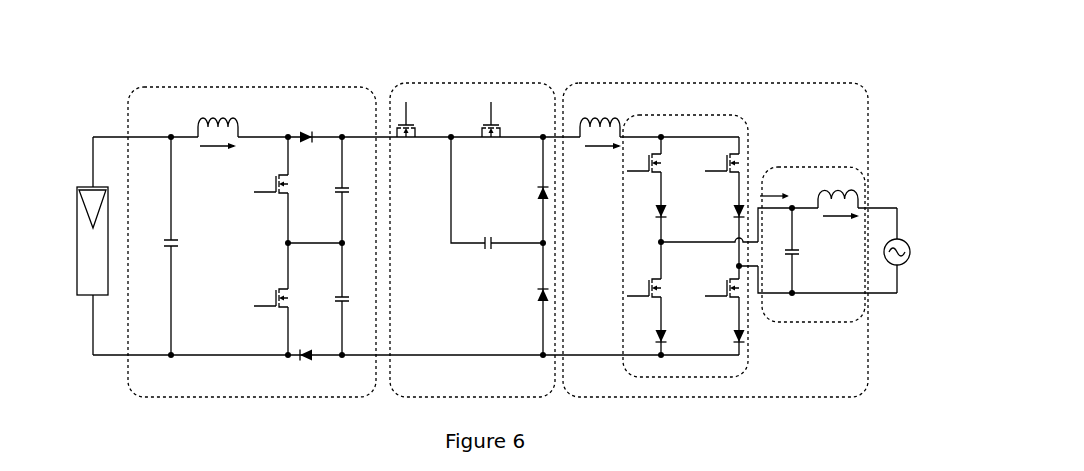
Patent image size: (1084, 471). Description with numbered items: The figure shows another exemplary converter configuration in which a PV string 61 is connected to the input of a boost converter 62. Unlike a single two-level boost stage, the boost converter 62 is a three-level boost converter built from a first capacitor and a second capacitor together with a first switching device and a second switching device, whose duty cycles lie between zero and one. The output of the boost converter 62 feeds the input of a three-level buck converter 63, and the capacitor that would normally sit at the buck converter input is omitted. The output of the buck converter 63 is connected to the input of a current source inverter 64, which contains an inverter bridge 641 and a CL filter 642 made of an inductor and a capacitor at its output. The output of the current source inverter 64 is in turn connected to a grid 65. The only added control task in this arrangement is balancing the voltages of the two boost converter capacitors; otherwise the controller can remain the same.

The PV string 61 is at (85, 183).
The boost converter 62 is at (240, 87).
The three-level buck converter 63 is at (470, 83).
The current source inverter 64 is at (730, 222).
The inverter bridge 641 is at (745, 115).
The CL filter 642 is at (800, 167).
The grid 65 is at (903, 233).